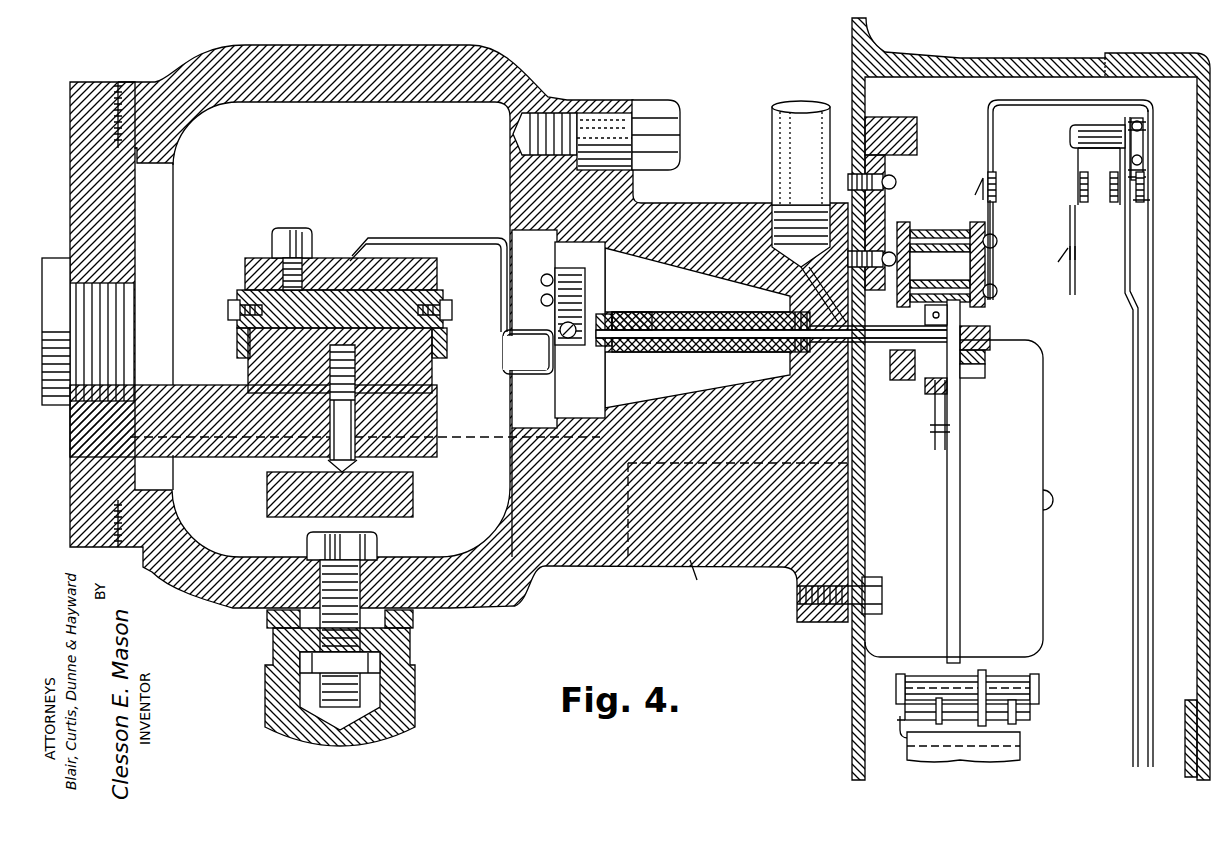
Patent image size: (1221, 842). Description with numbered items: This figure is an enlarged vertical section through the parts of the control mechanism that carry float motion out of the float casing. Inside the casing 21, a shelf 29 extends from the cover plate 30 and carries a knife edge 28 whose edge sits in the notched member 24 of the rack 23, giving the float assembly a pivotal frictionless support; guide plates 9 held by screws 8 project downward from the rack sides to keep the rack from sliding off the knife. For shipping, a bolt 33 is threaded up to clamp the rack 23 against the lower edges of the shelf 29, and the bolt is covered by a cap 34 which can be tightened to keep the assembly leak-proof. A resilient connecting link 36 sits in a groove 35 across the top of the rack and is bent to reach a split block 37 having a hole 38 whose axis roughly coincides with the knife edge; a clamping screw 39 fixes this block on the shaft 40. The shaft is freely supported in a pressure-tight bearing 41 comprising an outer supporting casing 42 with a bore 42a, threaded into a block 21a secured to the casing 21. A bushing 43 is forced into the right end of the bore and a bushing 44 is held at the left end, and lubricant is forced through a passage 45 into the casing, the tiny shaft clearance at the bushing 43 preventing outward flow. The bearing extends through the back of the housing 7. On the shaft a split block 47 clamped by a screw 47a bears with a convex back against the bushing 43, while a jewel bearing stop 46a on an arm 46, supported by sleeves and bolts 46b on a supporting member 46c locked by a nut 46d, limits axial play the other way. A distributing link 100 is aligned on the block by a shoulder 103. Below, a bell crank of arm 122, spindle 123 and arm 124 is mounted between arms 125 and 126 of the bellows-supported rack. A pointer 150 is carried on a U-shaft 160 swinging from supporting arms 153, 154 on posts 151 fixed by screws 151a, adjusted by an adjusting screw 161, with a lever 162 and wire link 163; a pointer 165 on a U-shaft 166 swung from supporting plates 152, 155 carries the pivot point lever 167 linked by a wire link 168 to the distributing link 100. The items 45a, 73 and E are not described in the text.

The housing 7 is at (975, 58).
The screws 8 is at (232, 305).
The guide plates 9 is at (237, 340).
The casing 21 is at (478, 70).
The block 21a is at (686, 548).
The rack 23 is at (418, 274).
The notched member 24 is at (426, 298).
The knife edge 28 is at (410, 374).
The shelf 29 is at (415, 414).
The cover plate 30 is at (120, 195).
The bolt 33 is at (362, 693).
The cap 34 is at (275, 708).
The groove 35 is at (432, 241).
The resilient connecting link 36 is at (376, 240).
The split block 37 is at (547, 284).
The hole 38 is at (318, 580).
The clamping screw 39 is at (562, 326).
The shaft 40 is at (692, 330).
The pressure-tight bearing 41 is at (760, 312).
The outer supporting casing 42 is at (775, 352).
The bore 42a is at (668, 352).
The bushing 43 is at (895, 355).
The bushing 44 is at (612, 318).
The passage 45 is at (880, 225).
The bracket hub 45a is at (992, 336).
The arm 46 is at (985, 257).
The jewel bearing stop 46a is at (1018, 298).
The bolts 46b is at (998, 236).
The supporting member 46c is at (940, 263).
The nut 46d is at (905, 380).
The split block 47 is at (928, 398).
The screw 47a is at (940, 315).
The bracket 73 is at (1020, 758).
The distributing link 100 is at (986, 355).
The shoulder 103 is at (986, 372).
The arm 122 is at (1030, 718).
The spindle 123 is at (936, 722).
The arm 124 is at (978, 718).
The arm 125 is at (898, 724).
The arm 126 is at (1038, 698).
The point E is at (1044, 718).
The pointer 150 is at (1125, 392).
The posts 151 is at (898, 128).
The screws 151a is at (896, 178).
The supporting plate 152 is at (1148, 202).
The supporting arm 153 is at (1108, 198).
The supporting arm 154 is at (1095, 170).
The supporting plate 155 is at (998, 178).
The U-shaft 160 is at (1075, 137).
The adjusting screw 161 is at (1145, 140).
The lever 162 is at (1076, 236).
The wire link 163 is at (1076, 273).
The pointer 165 is at (1152, 440).
The U-shaft 166 is at (1075, 102).
The pivot point lever 167 is at (985, 178).
The wire link 168 is at (993, 216).